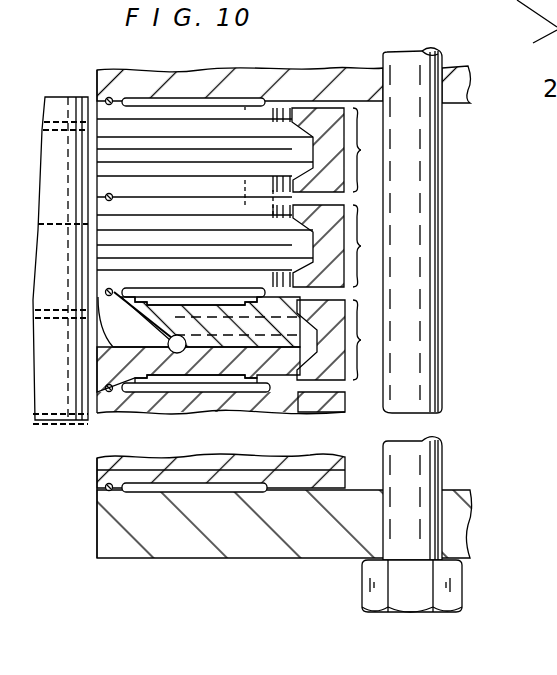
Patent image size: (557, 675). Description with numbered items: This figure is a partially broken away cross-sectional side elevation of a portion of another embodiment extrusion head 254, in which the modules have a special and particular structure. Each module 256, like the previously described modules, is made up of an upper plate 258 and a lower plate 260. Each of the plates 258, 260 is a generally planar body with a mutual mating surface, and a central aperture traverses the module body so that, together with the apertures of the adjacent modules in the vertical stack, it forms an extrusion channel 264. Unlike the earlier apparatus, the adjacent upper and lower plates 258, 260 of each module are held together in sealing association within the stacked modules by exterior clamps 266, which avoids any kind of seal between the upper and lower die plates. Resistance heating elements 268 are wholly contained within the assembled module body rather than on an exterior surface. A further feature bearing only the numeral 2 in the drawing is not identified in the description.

The body housing 2 is at (97, 253).
The extrusion head 254 is at (465, 221).
The module 256 is at (365, 148).
The upper plate 258 is at (128, 323).
The lower plate 260 is at (117, 372).
The extrusion channel 264 is at (88, 90).
The exterior clamps 266 is at (333, 215).
The resistance heating elements 268 is at (180, 388).